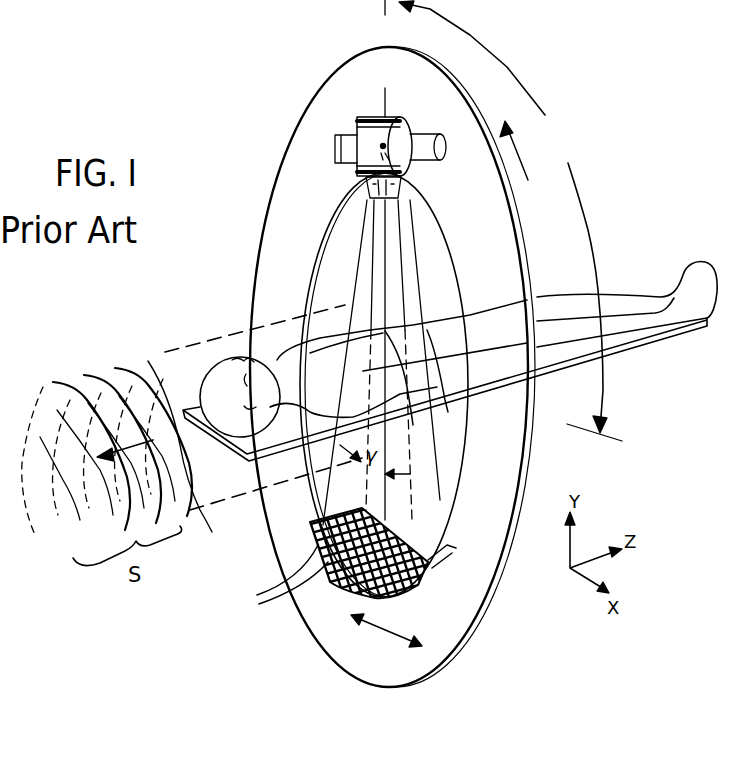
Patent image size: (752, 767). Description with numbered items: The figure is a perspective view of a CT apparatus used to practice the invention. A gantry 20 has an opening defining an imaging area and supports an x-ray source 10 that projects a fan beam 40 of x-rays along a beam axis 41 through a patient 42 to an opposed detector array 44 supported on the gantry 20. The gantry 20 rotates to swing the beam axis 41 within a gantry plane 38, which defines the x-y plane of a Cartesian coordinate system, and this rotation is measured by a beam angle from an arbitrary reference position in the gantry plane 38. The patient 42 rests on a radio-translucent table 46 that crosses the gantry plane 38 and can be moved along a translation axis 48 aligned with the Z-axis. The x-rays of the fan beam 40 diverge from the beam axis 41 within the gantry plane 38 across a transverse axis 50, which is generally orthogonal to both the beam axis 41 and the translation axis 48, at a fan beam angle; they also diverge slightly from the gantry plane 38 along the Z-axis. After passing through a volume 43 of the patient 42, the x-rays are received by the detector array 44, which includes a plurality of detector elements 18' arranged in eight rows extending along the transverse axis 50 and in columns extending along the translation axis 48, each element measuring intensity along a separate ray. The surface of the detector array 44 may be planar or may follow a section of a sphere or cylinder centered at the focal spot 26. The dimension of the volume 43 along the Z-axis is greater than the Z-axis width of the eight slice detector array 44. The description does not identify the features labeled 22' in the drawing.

The x-ray source 10 is at (446, 152).
The detector elements 18' is at (339, 545).
The gantry 20 is at (522, 478).
The image slices 22' is at (107, 420).
The focal spot 26 is at (383, 146).
The gantry plane 38 is at (299, 52).
The fan beam 40 is at (428, 264).
The beam axis 41 is at (388, 100).
The patient 42 is at (667, 313).
The volume 43 is at (430, 412).
The detector array 44 is at (440, 575).
The table 46 is at (703, 323).
The translation axis 48 is at (192, 456).
The transverse axis 50 is at (372, 630).